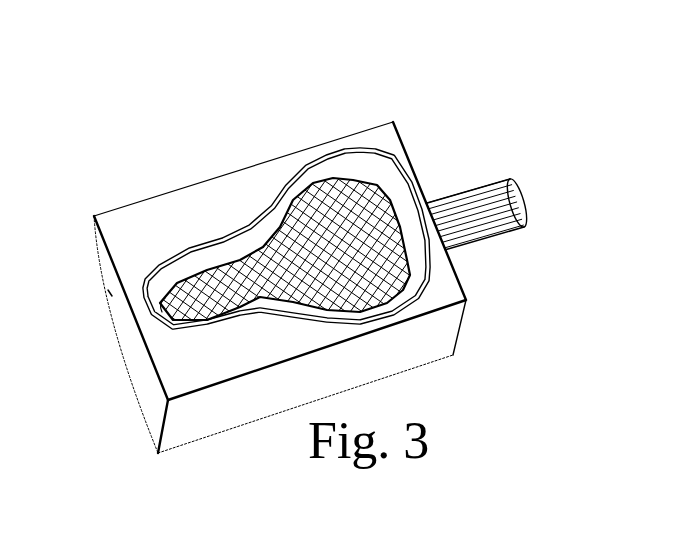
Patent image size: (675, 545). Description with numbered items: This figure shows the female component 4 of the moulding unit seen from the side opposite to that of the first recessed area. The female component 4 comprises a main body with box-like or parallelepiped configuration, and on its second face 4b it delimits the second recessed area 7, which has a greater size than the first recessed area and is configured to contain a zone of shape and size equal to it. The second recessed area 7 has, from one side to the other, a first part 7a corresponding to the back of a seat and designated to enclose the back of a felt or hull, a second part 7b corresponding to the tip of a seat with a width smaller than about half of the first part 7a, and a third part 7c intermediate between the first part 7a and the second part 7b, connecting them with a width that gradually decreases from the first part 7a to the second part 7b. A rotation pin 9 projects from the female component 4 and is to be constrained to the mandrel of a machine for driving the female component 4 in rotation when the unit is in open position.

The female component 4 is at (118, 317).
The second face 4b is at (137, 228).
The second recessed area 7 is at (342, 168).
The first part 7a is at (400, 224).
The second part 7b is at (182, 300).
The third part 7c is at (253, 253).
The rotation pin 9 is at (490, 182).